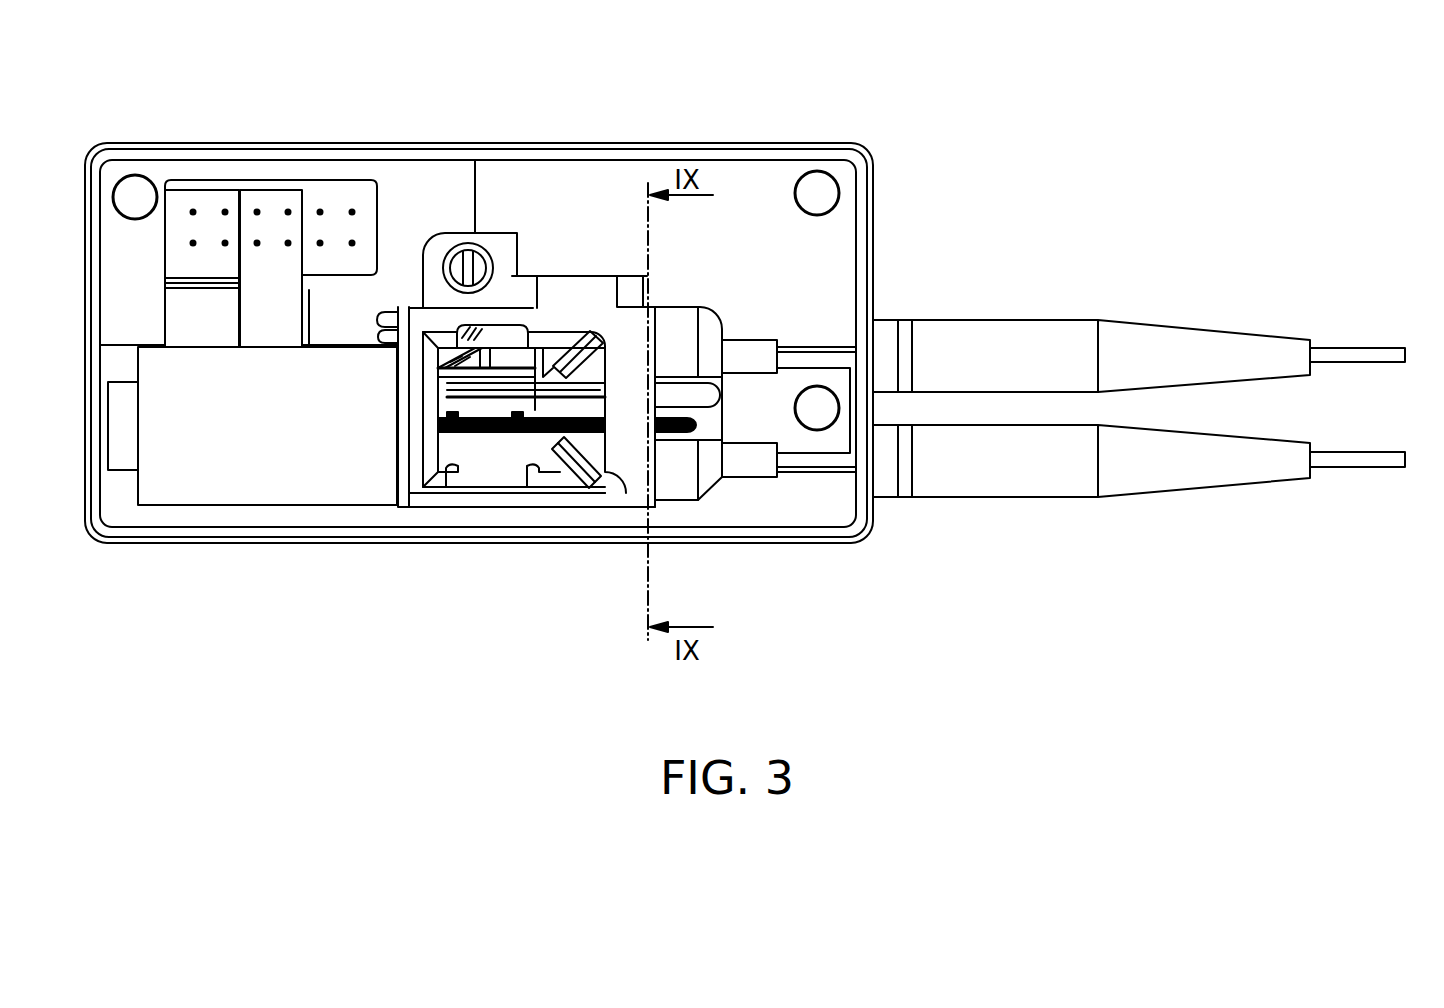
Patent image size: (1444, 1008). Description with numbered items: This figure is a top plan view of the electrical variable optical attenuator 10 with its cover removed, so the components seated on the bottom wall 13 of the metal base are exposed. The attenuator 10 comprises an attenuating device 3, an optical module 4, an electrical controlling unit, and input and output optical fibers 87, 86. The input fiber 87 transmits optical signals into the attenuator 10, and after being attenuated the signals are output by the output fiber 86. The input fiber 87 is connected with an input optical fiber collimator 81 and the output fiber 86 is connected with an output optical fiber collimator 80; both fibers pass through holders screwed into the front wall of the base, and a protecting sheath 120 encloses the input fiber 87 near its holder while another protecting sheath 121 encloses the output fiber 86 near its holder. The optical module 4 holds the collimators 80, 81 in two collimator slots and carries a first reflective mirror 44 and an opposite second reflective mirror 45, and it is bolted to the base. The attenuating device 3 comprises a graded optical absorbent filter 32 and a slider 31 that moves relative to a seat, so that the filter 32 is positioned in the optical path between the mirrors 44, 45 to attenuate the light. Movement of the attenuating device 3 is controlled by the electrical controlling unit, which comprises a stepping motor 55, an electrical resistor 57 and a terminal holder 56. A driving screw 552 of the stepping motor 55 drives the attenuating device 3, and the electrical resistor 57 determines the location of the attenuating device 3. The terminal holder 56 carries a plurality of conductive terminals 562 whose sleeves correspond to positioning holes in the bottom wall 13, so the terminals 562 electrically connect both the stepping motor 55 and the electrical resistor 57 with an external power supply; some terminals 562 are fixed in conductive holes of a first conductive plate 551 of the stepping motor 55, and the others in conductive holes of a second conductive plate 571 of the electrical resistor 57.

The electrical variable optical attenuator 10 is at (641, 301).
The bottom wall 13 is at (397, 178).
The attenuating device 3 is at (470, 413).
The slider 31 is at (455, 357).
The graded optical absorbent filter 32 is at (573, 432).
The optical module 4 is at (577, 262).
The first reflective mirror 44 is at (608, 355).
The second reflective mirror 45 is at (613, 482).
The stepping motor 55 is at (350, 473).
The first conductive plate 551 is at (180, 198).
The driving screw 552 is at (597, 457).
The terminal holder 56 is at (328, 190).
The conductive terminals 562 is at (193, 212).
The second conductive plate 571 is at (265, 198).
The electrical resistor 57 is at (515, 340).
The output optical fiber collimator 80 is at (753, 463).
The input optical fiber collimator 81 is at (740, 357).
The protecting sheath 120 is at (990, 338).
The protecting sheath 121 is at (1005, 482).
The output optical fiber 86 is at (1357, 458).
The input optical fiber 87 is at (1347, 352).